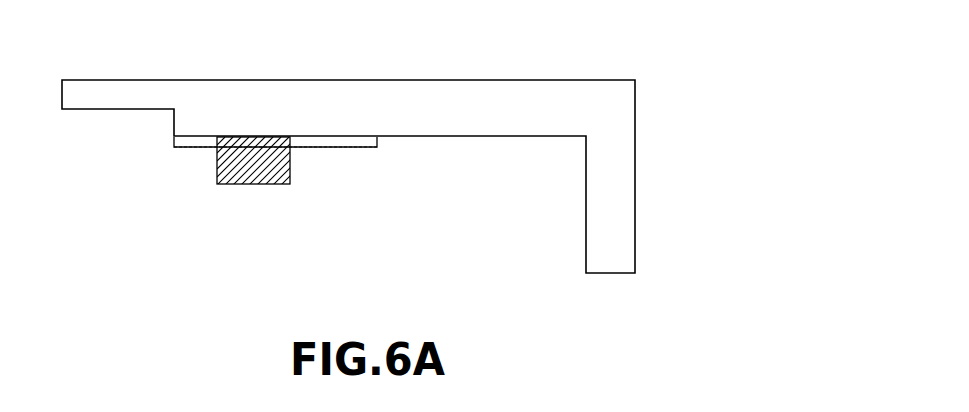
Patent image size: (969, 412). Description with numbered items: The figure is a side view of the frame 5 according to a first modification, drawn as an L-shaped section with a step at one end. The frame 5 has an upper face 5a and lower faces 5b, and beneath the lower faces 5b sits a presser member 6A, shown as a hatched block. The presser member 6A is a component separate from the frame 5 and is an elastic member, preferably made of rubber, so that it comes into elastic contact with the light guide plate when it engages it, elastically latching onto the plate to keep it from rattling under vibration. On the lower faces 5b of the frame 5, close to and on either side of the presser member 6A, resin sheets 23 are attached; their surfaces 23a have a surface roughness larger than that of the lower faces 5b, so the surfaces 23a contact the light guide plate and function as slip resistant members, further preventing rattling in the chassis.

The frame 5 is at (663, 199).
The upper face of frame 5a is at (485, 98).
The lower faces of frame 5b is at (397, 134).
The resin sheets 23 is at (183, 150).
The surfaces of resin sheets 23a is at (196, 150).
The presser member 6A is at (263, 206).